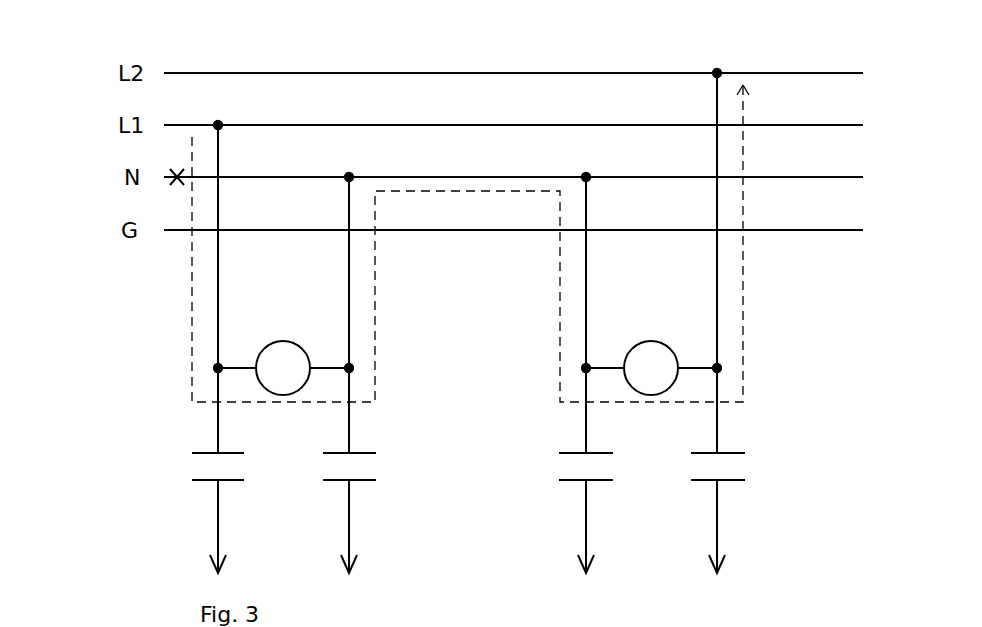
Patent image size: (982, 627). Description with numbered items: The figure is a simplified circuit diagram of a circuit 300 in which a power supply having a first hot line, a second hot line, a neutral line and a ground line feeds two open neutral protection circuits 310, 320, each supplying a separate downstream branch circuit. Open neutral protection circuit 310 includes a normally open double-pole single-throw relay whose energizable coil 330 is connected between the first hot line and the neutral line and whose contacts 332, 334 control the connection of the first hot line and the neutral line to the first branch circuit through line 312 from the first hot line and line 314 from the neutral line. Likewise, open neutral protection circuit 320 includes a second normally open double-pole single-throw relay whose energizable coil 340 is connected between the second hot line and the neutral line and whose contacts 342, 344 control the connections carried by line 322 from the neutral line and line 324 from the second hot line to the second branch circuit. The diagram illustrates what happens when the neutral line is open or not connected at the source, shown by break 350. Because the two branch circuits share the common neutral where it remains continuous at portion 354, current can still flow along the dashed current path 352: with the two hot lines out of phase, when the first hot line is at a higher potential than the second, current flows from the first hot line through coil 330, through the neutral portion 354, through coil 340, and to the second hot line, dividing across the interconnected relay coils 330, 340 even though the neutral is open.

The simplified circuit 300 is at (106, 53).
The open neutral protection circuit 310 is at (132, 320).
The line 312 is at (218, 520).
The line 314 is at (349, 520).
The open neutral protection circuit 320 is at (801, 314).
The line 322 is at (586, 515).
The line 324 is at (718, 515).
The energizable coil 330 is at (290, 342).
The contact 332 is at (230, 482).
The contact 334 is at (333, 452).
The energizable coil 340 is at (660, 342).
The contact 342 is at (598, 482).
The contact 344 is at (703, 452).
The break 350 is at (164, 188).
The current path 352 is at (462, 190).
The portion of neutral line N 354 is at (390, 176).